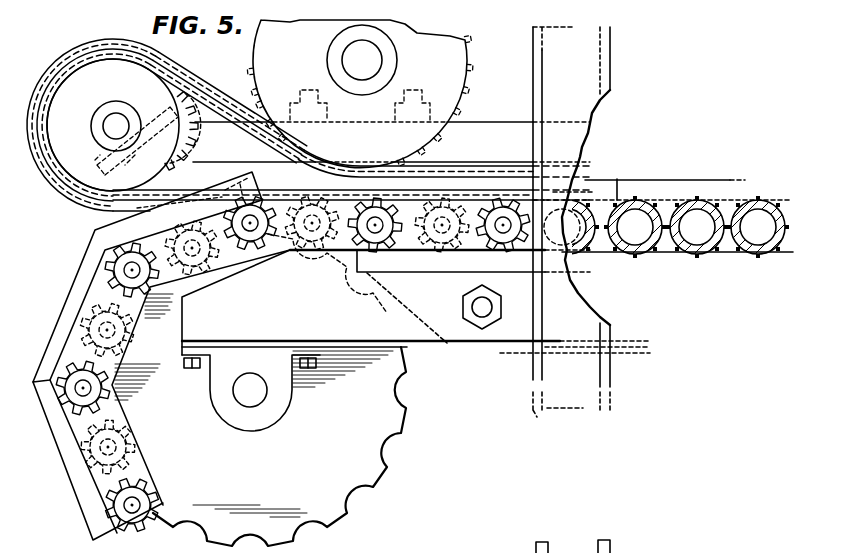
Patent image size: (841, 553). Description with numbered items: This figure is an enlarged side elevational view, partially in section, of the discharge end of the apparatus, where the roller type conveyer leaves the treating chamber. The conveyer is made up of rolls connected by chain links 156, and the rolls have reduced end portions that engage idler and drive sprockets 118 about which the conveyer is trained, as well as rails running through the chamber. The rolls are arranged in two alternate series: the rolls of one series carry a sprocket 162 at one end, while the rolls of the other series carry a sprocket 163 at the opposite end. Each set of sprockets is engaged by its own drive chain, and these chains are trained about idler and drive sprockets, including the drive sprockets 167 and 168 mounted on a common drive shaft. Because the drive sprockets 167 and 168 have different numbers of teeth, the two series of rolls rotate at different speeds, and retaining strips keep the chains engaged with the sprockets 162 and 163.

The sprockets 118 is at (272, 491).
The chain links 156 is at (118, 356).
The sprocket 162 is at (116, 270).
The sprocket 163 is at (225, 276).
The drive sprocket 167 is at (72, 93).
The drive sprocket 168 is at (190, 97).